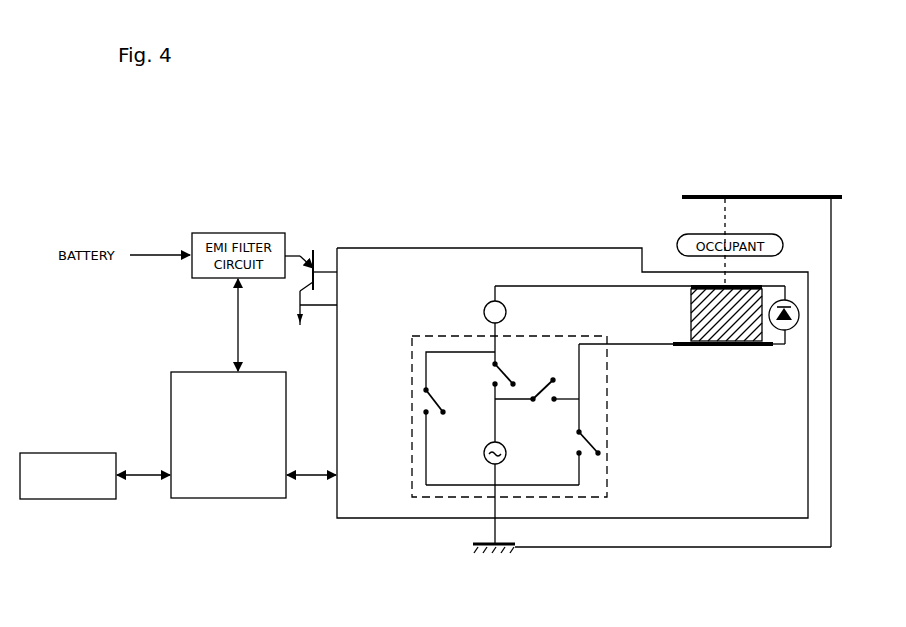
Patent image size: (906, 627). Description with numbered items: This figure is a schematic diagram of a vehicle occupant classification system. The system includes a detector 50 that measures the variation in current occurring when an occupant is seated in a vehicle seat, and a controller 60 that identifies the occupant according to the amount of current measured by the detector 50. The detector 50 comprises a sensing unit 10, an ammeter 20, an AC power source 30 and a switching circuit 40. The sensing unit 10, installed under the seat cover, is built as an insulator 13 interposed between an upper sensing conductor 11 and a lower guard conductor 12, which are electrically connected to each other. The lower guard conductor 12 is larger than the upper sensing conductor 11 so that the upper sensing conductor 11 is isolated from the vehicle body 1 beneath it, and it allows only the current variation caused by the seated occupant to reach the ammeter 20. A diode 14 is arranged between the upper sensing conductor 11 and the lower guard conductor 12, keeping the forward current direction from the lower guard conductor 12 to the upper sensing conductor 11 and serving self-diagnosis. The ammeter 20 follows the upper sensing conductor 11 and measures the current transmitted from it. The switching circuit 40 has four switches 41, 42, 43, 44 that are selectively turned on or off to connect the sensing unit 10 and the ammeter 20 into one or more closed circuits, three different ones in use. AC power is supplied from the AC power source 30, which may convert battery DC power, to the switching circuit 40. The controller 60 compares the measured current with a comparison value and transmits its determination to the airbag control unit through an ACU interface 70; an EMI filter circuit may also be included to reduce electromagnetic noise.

The vehicle body 1 is at (806, 195).
The sensing unit 10 is at (774, 336).
The upper sensing conductor 11 is at (766, 290).
The lower guard conductor 12 is at (765, 347).
The insulator 13 is at (717, 347).
The diode 14 is at (797, 325).
The ammeter 20 is at (487, 306).
The AC power source 30 is at (487, 465).
The switching circuit 40 is at (514, 396).
The first switch 41 is at (505, 370).
The second switch 42 is at (549, 408).
The third switch 43 is at (600, 432).
The fourth switch 44 is at (424, 401).
The detector 50 is at (525, 247).
The controller 60 is at (236, 499).
The ACU interface 70 is at (78, 500).